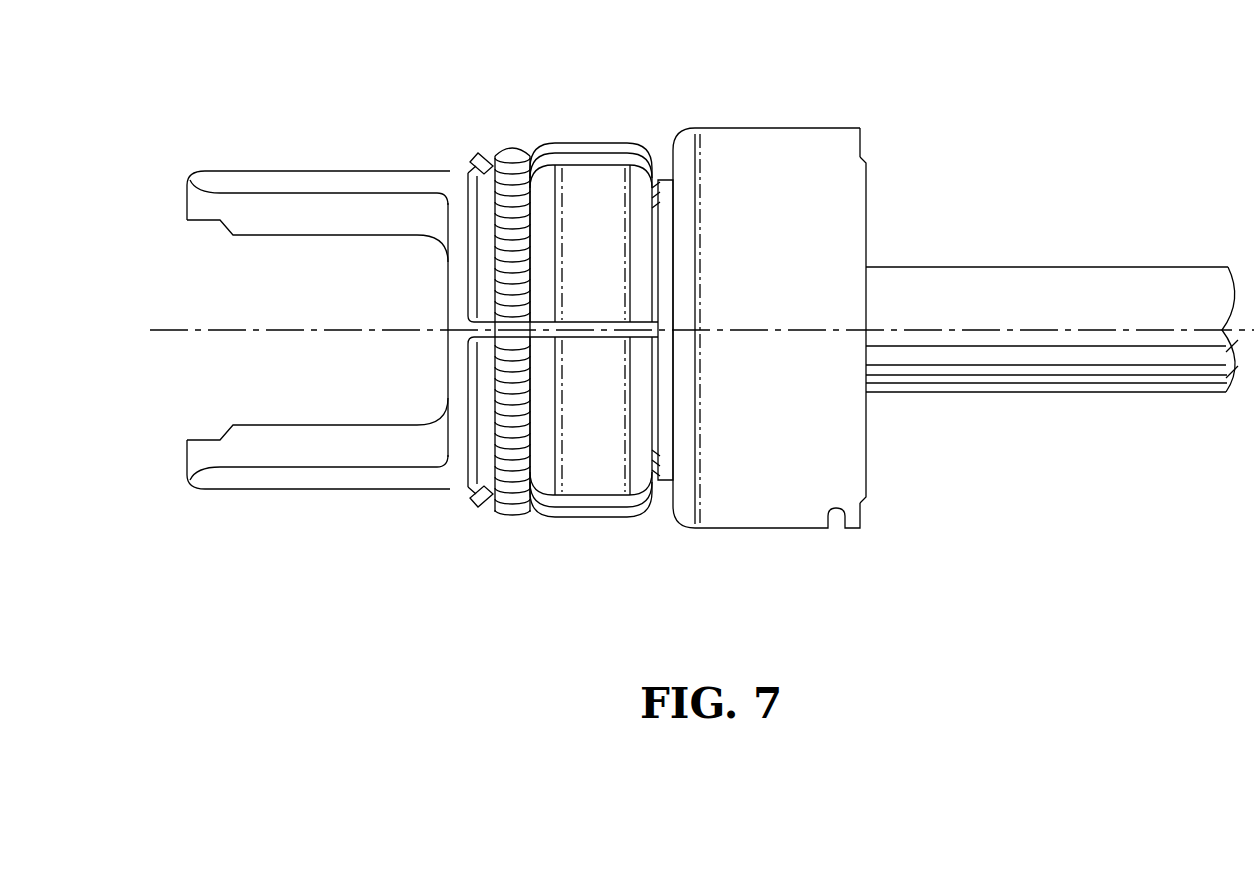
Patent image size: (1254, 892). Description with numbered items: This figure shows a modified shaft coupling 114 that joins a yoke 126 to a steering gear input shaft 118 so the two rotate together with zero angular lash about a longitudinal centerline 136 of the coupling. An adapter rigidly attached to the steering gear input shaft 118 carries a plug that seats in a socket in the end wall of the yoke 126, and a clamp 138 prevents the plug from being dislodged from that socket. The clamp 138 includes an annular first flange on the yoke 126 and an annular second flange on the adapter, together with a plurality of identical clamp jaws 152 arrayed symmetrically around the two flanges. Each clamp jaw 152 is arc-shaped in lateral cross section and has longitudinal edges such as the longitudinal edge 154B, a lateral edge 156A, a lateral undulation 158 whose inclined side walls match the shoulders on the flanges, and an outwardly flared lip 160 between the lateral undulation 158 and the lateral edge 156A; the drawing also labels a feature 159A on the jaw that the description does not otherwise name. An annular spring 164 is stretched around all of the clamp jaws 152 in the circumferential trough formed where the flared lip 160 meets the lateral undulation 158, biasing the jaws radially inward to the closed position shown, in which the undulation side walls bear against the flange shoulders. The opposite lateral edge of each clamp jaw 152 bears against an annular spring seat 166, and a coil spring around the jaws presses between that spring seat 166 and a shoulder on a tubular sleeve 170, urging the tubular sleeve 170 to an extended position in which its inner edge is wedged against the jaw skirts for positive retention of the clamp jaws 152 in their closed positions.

The modified shaft coupling 114 is at (698, 86).
The steering gear input shaft 118 is at (1076, 265).
The yoke 126 is at (325, 168).
The longitudinal centerline 136 is at (797, 325).
The clamp 138 is at (698, 116).
The clamp jaws 152 is at (580, 136).
The longitudinal edge 154B is at (578, 322).
The lateral edge 156A is at (470, 228).
The lateral undulation 158 is at (585, 192).
The groove 159A is at (600, 165).
The outwardly flared lip 160 is at (483, 270).
The annular spring 164 is at (515, 502).
The annular spring seat 166 is at (866, 197).
The tubular sleeve 170 is at (814, 130).